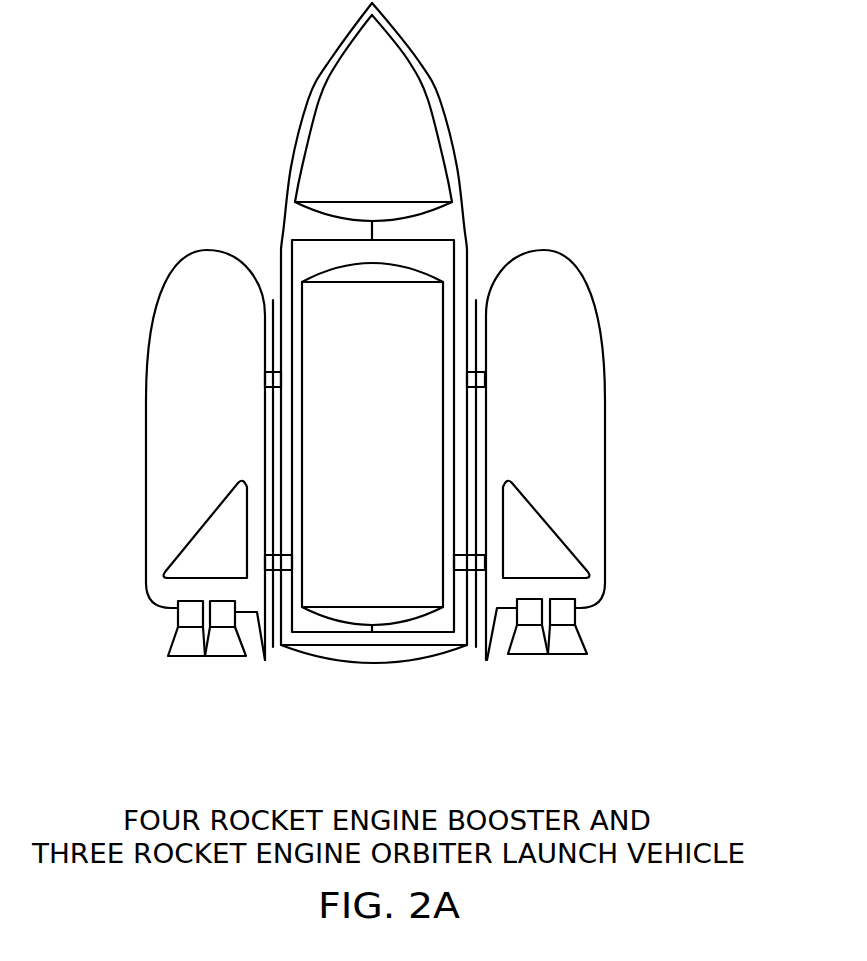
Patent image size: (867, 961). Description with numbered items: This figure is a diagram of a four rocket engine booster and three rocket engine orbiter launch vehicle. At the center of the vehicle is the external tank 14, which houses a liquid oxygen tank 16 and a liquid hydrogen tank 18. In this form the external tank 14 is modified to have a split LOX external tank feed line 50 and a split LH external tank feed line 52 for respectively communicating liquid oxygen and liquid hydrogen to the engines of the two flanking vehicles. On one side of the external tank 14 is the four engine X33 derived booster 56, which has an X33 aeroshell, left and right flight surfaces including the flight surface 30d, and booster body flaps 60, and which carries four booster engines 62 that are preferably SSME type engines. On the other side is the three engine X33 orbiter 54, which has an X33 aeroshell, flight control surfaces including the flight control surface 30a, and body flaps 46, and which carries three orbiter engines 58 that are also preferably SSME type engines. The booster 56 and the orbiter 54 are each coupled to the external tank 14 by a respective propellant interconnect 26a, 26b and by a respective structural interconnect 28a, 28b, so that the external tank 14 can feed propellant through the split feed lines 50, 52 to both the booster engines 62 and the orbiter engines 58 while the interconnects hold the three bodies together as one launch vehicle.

The external tank 14 is at (418, 61).
The liquid oxygen tank 16 is at (430, 115).
The split LOX external tank feed line 50 is at (447, 235).
The liquid hydrogen tank 18 is at (410, 622).
The split LH external tank feed line 52 is at (343, 640).
The structural interconnect 28a is at (273, 300).
The structural interconnect 28b is at (476, 300).
The propellant interconnect 26a is at (273, 647).
The propellant interconnect 26b is at (476, 647).
The four engine X33 derived booster 56 is at (155, 328).
The three engine X33 orbiter 54 is at (592, 317).
The right flight surface 30d is at (172, 550).
The flight control surface 30a is at (577, 547).
The four booster engines 62 is at (176, 631).
The three orbiter engines 58 is at (578, 628).
The booster body flaps 60 is at (263, 660).
The body flaps 46 is at (487, 660).